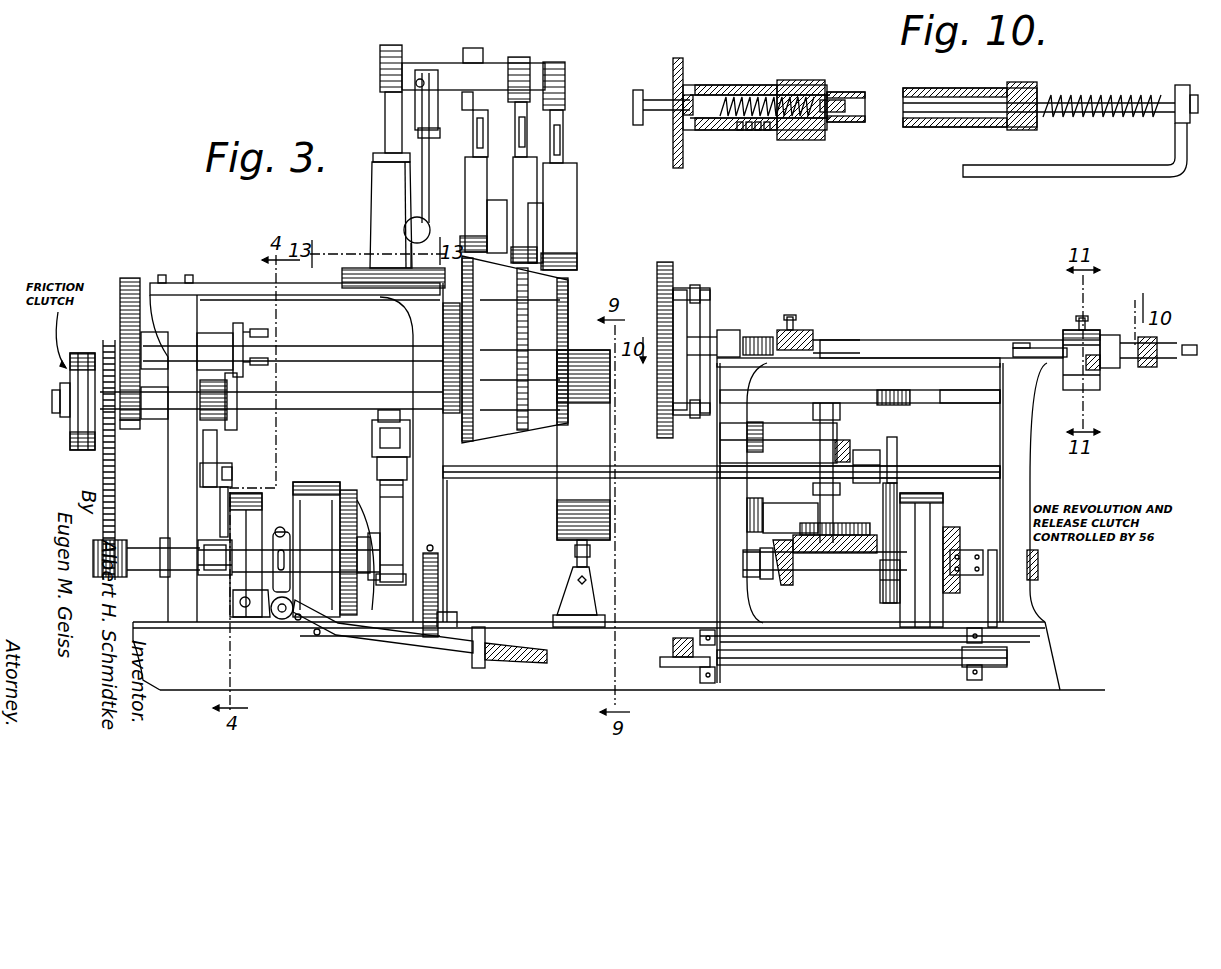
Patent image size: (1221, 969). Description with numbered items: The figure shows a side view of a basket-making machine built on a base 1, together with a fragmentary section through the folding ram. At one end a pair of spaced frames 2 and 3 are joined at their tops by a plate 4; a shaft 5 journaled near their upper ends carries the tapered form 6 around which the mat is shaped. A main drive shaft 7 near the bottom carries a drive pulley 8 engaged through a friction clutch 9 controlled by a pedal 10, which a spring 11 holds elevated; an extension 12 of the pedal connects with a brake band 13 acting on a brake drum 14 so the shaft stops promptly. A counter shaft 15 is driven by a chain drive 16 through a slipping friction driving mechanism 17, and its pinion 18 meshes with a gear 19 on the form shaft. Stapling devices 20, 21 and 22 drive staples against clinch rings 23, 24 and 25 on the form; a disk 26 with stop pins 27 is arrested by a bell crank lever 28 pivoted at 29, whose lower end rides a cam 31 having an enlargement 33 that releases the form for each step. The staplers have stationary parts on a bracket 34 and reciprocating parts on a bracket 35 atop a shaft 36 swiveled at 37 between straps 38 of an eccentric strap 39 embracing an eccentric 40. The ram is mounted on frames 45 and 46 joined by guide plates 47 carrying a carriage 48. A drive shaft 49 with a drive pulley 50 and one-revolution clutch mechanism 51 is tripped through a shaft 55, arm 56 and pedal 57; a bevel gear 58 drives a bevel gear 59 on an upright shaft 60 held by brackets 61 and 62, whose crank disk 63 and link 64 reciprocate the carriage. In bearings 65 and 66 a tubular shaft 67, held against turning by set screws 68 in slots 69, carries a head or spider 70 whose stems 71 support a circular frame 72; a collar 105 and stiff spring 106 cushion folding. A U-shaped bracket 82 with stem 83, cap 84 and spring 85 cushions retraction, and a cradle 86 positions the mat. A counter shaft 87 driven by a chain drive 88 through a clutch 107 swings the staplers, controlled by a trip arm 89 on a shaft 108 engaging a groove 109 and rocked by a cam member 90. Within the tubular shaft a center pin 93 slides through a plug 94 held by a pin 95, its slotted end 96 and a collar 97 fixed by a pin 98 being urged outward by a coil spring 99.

In FIG. 3, the base 1 is at (650, 624).
In FIG. 3, the frame 2 is at (166, 502).
In FIG. 3, the frame 3 is at (447, 519).
In FIG. 3, the plate 4 is at (219, 283).
In FIG. 3, the shaft 5 is at (318, 356).
In FIG. 3, the tapered form 6 is at (572, 284).
In FIG. 3, the main drive shaft 7 is at (133, 547).
In FIG. 3, the drive pulley 8 is at (312, 482).
In FIG. 3, the friction clutch 9 is at (350, 500).
In FIG. 3, the pedal 10 is at (497, 643).
In FIG. 3, the spring 11 is at (438, 598).
In FIG. 3, the extension 12 is at (252, 612).
In FIG. 3, the brake band 13 is at (240, 583).
In FIG. 3, the brake drum 14 is at (240, 598).
In FIG. 3, the counter shaft 15 is at (336, 398).
In FIG. 3, the chain drive 16 is at (103, 468).
In FIG. 3, the friction driving mechanism 17 is at (75, 360).
In FIG. 3, the pinion 18 is at (134, 432).
In FIG. 3, the gear 19 is at (130, 278).
In FIG. 3, the stapling device 20 is at (480, 170).
In FIG. 3, the stapling device 21 is at (537, 175).
In FIG. 3, the stapling device 22 is at (563, 187).
In FIG. 3, the clinch ring 23 is at (473, 428).
In FIG. 3, the clinch ring 24 is at (519, 430).
In FIG. 3, the clinch ring 25 is at (553, 420).
In FIG. 3, the disk 26 is at (232, 416).
In FIG. 3, the stop pins 27 is at (215, 333).
In FIG. 3, the bell crank lever 28 is at (217, 462).
In FIG. 3, the pivot 29 is at (233, 479).
In FIG. 3, the cam 31 is at (222, 570).
In FIG. 3, the enlargement 33 is at (208, 541).
In FIG. 3, the bracket 34 is at (372, 200).
In FIG. 3, the bracket 35 is at (445, 60).
In FIG. 3, the shaft 36 is at (385, 120).
In FIG. 3, the swivel 37 is at (378, 416).
In FIG. 3, the straps 38 is at (380, 452).
In FIG. 3, the eccentric strap 39 is at (390, 585).
In FIG. 3, the eccentric 40 is at (405, 520).
In FIG. 3, the frame 45 is at (727, 505).
In FIG. 3, the frame 46 is at (1023, 502).
In FIG. 3, the guide plates 47 is at (955, 360).
In FIG. 3, the carriage 48 is at (1094, 368).
In FIG. 10, the carriage 48 is at (813, 140).
In FIG. 3, the drive shaft 49 is at (846, 571).
In FIG. 3, the drive pulley 50 is at (905, 600).
In FIG. 3, the clutch mechanism 51 is at (967, 545).
In FIG. 3, the shaft 55 is at (793, 666).
In FIG. 3, the arm 56 is at (992, 617).
In FIG. 3, the pedal 57 is at (668, 668).
In FIG. 3, the bevel gear 58 is at (784, 586).
In FIG. 3, the bevel gear 59 is at (825, 555).
In FIG. 3, the upright shaft 60 is at (818, 491).
In FIG. 3, the bracket 61 is at (745, 440).
In FIG. 3, the bracket 62 is at (750, 518).
In FIG. 3, the crank disk 63 is at (800, 393).
In FIG. 3, the link 64 is at (957, 396).
In FIG. 3, the bearing 65 is at (805, 330).
In FIG. 3, the bearing 66 is at (1065, 333).
In FIG. 3, the tubular shaft 67 is at (930, 340).
In FIG. 10, the tubular shaft 67 is at (920, 125).
In FIG. 3, the set screws 68 is at (792, 315).
In FIG. 3, the slots 69 is at (828, 340).
In FIG. 3, the head or spider 70 is at (710, 300).
In FIG. 10, the head or spider 70 is at (678, 170).
In FIG. 3, the stems 71 is at (690, 288).
In FIG. 3, the circular frame 72 is at (672, 265).
In FIG. 3, the U-shaped bracket 82 is at (1043, 348).
In FIG. 10, the U-shaped bracket 82 is at (1128, 172).
In FIG. 10, the stem 83 is at (1157, 98).
In FIG. 10, the cap 84 is at (1030, 90).
In FIG. 10, the spring 85 is at (1103, 100).
In FIG. 3, the cradle 86 is at (563, 520).
In FIG. 3, the counter shaft 87 is at (553, 479).
In FIG. 3, the chain drive 88 is at (903, 520).
In FIG. 3, the trip arm 89 is at (886, 503).
In FIG. 3, the cam member 90 is at (812, 535).
In FIG. 10, the center pin 93 is at (657, 113).
In FIG. 10, the collar or plug 94 is at (827, 95).
In FIG. 10, the pin 95 is at (853, 95).
In FIG. 10, the slot 96 is at (787, 140).
In FIG. 10, the collar 97 is at (687, 120).
In FIG. 10, the pin 98 is at (683, 108).
In FIG. 10, the coil spring 99 is at (760, 87).
In FIG. 3, the collar 105 is at (1122, 362).
In FIG. 3, the spring 106 is at (755, 336).
In FIG. 10, the spring 106 is at (753, 133).
In FIG. 3, the clutch 107 is at (866, 452).
In FIG. 3, the shaft 108 is at (957, 467).
In FIG. 3, the groove 109 is at (845, 445).